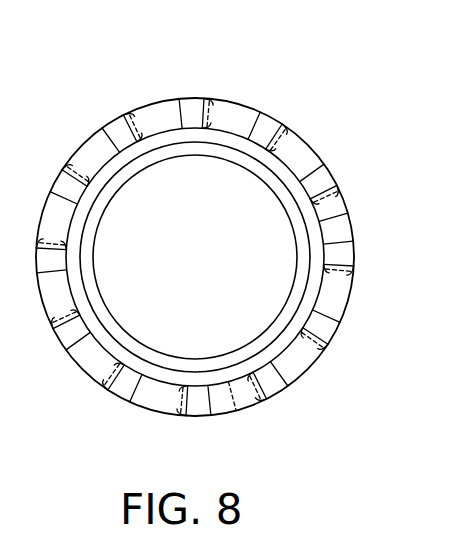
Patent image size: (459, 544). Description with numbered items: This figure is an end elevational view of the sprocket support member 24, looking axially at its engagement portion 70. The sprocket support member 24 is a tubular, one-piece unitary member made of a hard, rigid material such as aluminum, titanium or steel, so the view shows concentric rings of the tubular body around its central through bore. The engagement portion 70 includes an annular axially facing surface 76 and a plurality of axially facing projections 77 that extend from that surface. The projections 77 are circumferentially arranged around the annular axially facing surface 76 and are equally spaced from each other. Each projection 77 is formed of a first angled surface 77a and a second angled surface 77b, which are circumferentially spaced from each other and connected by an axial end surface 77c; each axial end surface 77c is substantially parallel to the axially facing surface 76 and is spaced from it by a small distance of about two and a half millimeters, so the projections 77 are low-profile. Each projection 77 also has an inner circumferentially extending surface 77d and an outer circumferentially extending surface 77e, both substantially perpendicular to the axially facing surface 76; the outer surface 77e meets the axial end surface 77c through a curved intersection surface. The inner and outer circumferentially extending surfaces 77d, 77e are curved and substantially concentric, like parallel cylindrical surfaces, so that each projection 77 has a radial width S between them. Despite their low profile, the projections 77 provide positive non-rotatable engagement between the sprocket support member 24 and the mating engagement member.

The sprocket support member 24 is at (325, 95).
The engagement portion 70 is at (347, 312).
The annular axially facing surface 76 is at (123, 133).
The axially facing projections 77 is at (350, 215).
The first angled surface 77a is at (145, 378).
The second angled surface 77b is at (57, 282).
The axial end surface 77c is at (57, 233).
The inner circumferentially extending surface 77d is at (229, 108).
The outer circumferentially extending surface 77e is at (229, 106).
The radial width S is at (165, 118).